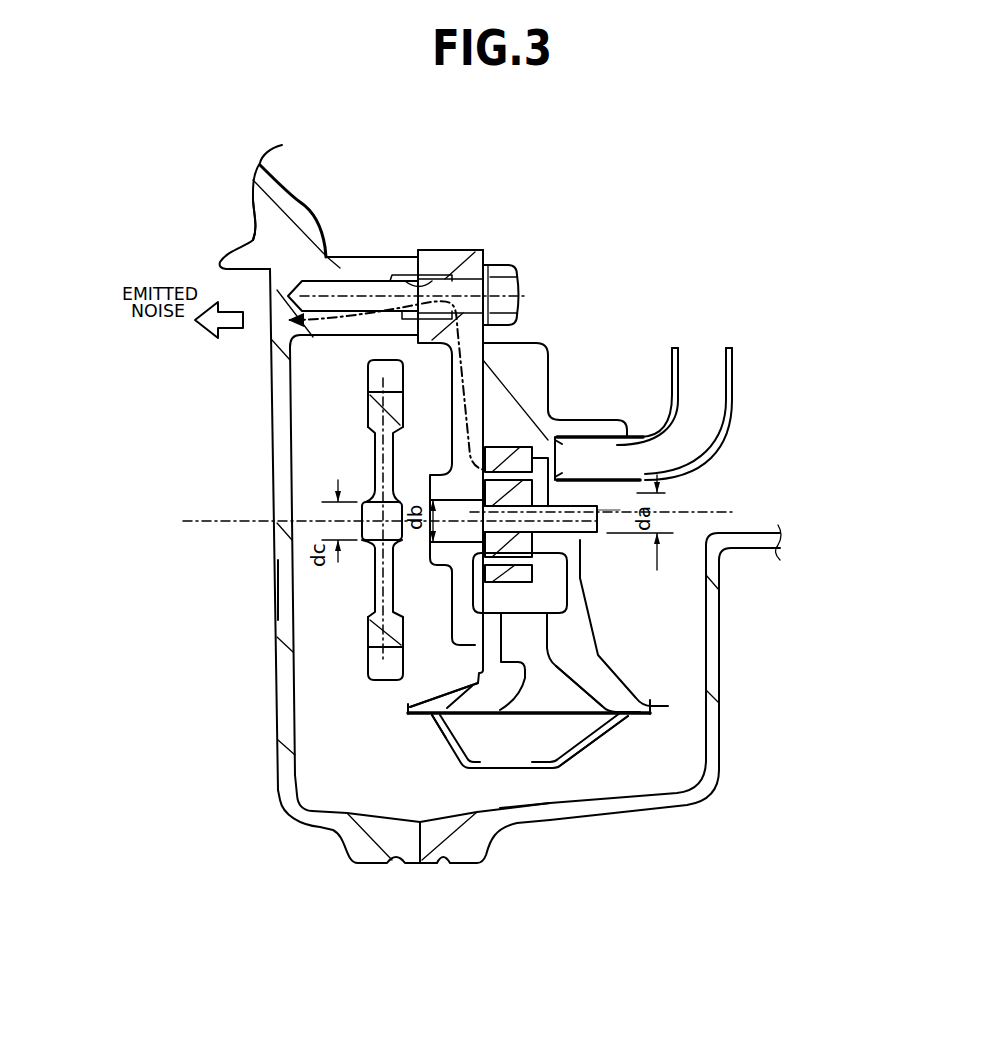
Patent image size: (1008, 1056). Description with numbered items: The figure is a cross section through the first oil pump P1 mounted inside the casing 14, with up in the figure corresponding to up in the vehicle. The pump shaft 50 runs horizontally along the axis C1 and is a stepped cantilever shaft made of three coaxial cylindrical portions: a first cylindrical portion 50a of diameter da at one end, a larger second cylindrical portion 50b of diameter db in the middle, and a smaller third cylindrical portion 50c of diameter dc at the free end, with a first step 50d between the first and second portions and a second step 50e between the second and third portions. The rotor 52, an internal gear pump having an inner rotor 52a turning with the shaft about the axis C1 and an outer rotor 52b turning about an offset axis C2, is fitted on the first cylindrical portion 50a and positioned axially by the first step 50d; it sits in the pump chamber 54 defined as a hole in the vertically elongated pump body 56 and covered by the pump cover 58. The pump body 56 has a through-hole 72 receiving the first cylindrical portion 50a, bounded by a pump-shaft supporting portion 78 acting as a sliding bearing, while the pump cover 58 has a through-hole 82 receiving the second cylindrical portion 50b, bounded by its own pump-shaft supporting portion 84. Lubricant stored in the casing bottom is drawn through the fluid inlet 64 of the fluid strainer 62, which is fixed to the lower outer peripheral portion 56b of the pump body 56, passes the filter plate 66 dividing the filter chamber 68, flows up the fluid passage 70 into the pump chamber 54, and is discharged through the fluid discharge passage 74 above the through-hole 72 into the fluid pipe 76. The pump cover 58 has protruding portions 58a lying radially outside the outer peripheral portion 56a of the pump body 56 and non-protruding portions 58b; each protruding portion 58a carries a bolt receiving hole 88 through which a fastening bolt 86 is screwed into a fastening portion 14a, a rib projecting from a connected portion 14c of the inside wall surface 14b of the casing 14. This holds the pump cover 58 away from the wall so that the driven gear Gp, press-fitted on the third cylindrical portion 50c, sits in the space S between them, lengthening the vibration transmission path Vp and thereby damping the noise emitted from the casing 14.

The casing 14 is at (313, 862).
The fastening portion 14a is at (357, 268).
The inside wall surface 14b is at (295, 583).
The connected portion 14c is at (280, 297).
The pump shaft 50 is at (458, 570).
The first cylindrical portion 50a is at (590, 533).
The second cylindrical portion 50b is at (413, 492).
The third cylindrical portion 50c is at (355, 512).
The first step 50d is at (432, 575).
The second step 50e is at (387, 560).
The rotor 52 is at (595, 627).
The inner rotor 52a is at (473, 640).
The outer rotor 52b is at (567, 626).
The pump chamber 54 is at (553, 565).
The pump body 56 is at (603, 518).
The outer peripheral portion 56a is at (507, 353).
The outer peripheral portion 56b is at (717, 762).
The pump cover 58 is at (451, 451).
The protruding portion 58a is at (471, 258).
The non-protruding portion 58b is at (470, 683).
The fluid strainer 62 is at (585, 766).
The fluid inlet 64 is at (527, 770).
The filter plate 66 is at (460, 769).
The filter chamber 68 is at (587, 731).
The fluid passage 70 is at (443, 724).
The through-hole 72 is at (580, 495).
The fluid discharge passage 74 is at (710, 440).
The fluid pipe 76 is at (733, 382).
The pump-shaft supporting portion 78 is at (623, 510).
The through-hole 82 is at (457, 488).
The pump-shaft supporting portion 84 is at (452, 608).
The fastening bolt 86 is at (508, 267).
The bolt receiving hole 88 is at (406, 281).
The vibration transmission path Vp is at (365, 285).
The driven gear Gp is at (373, 428).
The axis C1 is at (188, 521).
The axis C2 is at (735, 512).
The first oil pump P1 is at (609, 369).
The space S is at (337, 773).